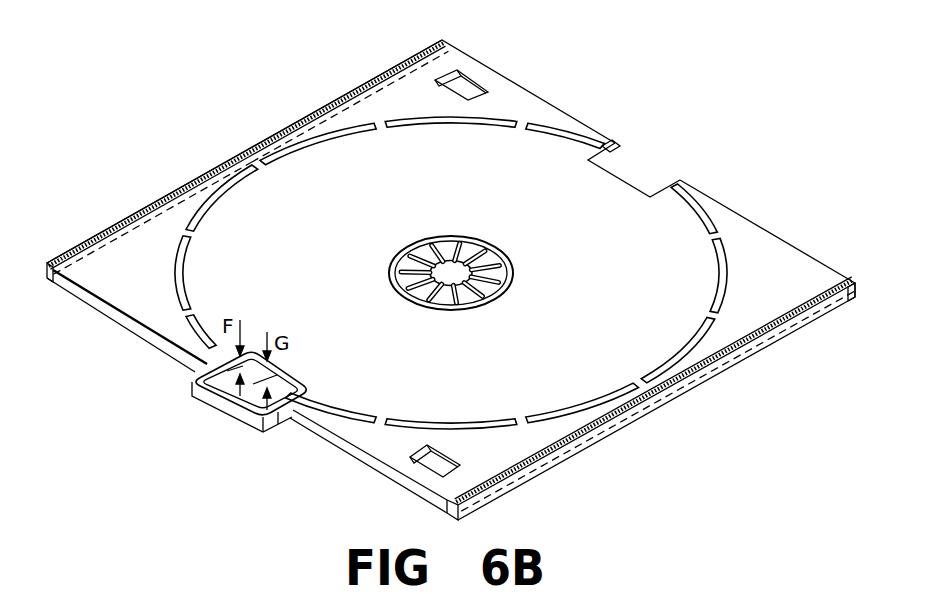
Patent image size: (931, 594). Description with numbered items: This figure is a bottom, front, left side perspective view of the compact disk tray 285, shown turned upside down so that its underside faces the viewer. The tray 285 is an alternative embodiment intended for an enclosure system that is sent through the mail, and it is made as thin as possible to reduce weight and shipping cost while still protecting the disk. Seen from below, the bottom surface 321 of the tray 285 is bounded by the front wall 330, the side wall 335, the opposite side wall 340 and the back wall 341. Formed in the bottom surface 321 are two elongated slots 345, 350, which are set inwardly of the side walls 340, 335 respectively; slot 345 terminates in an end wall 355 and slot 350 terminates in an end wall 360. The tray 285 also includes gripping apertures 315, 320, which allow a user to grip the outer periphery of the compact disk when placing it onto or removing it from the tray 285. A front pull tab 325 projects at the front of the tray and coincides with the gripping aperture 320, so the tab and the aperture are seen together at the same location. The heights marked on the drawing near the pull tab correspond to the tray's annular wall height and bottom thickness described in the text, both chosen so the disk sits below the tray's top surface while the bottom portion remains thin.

The compact disk tray 285 is at (323, 82).
The gripping aperture 315 is at (642, 173).
The gripping aperture 320 is at (202, 397).
The bottom surface 321 is at (463, 391).
The front pull tab 325 is at (256, 437).
The front wall 330 is at (147, 333).
The side wall 335 is at (118, 222).
The side wall 340 is at (547, 463).
The back wall 341 is at (537, 97).
The elongated slot 345 is at (437, 513).
The elongated slot 350 is at (46, 287).
The end wall 355 is at (830, 283).
The end wall 360 is at (422, 56).